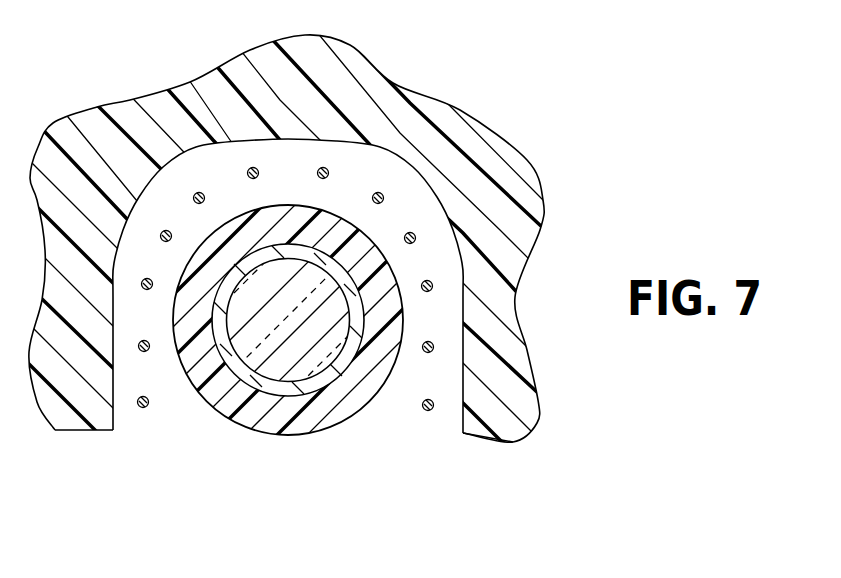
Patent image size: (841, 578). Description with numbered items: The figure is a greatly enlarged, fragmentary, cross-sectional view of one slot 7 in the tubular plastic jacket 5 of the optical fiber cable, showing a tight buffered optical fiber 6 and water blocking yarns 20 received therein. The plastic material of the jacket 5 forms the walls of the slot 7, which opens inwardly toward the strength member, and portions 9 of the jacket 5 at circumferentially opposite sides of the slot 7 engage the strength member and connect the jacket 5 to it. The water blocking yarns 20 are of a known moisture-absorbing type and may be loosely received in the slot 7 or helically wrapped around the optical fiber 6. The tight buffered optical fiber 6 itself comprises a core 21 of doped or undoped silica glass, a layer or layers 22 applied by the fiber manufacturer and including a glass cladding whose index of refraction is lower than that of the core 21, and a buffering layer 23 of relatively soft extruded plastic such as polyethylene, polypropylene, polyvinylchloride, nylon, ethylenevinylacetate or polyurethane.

The jacket 5 is at (490, 153).
The tight buffered optical fiber 6 is at (268, 444).
The slot 7 is at (363, 167).
The portions 9 is at (73, 432).
The water blocking yarns 20 is at (250, 168).
The core 21 is at (307, 331).
The layer or layers 22 is at (338, 367).
The buffering layer 23 is at (227, 407).